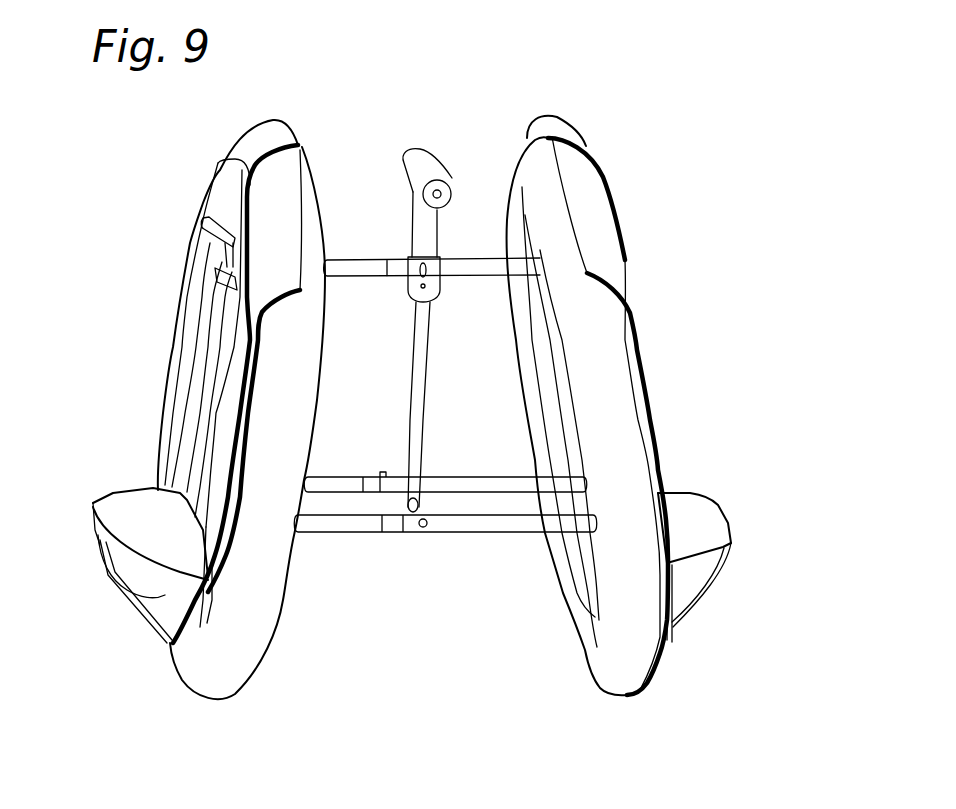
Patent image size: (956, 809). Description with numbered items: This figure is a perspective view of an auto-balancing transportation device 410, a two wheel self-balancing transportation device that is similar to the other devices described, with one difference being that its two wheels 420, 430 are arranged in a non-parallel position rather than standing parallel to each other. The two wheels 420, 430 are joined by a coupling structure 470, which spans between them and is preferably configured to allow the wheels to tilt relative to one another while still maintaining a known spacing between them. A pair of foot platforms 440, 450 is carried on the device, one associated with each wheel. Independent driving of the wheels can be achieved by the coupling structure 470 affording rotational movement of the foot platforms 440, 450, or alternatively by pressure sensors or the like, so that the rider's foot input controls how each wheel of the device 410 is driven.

The auto-balancing transportation device 410 is at (690, 155).
The wheel 420 is at (630, 694).
The wheel 430 is at (228, 698).
The foot platform 440 is at (722, 517).
The foot platform 450 is at (112, 492).
The coupling structure 470 is at (463, 580).